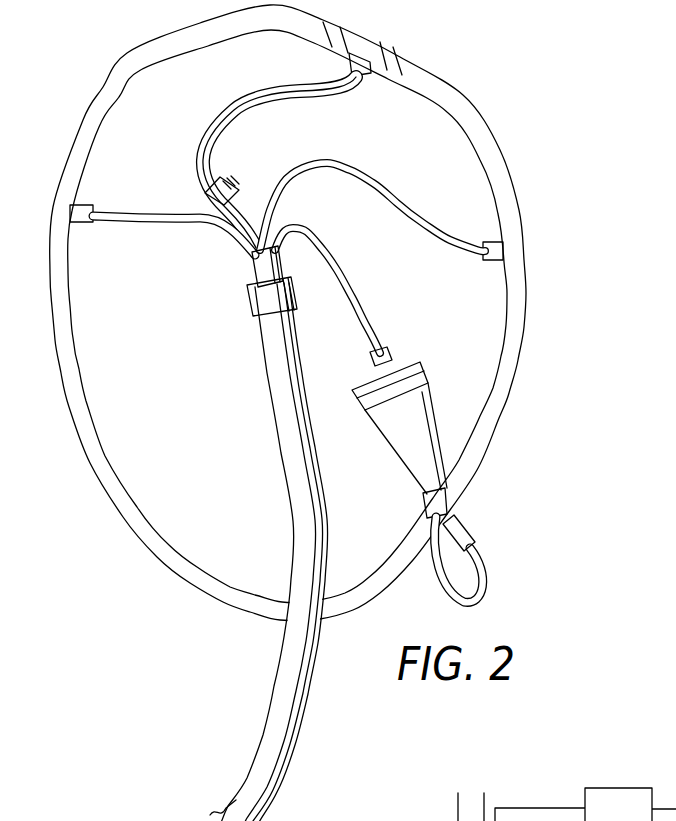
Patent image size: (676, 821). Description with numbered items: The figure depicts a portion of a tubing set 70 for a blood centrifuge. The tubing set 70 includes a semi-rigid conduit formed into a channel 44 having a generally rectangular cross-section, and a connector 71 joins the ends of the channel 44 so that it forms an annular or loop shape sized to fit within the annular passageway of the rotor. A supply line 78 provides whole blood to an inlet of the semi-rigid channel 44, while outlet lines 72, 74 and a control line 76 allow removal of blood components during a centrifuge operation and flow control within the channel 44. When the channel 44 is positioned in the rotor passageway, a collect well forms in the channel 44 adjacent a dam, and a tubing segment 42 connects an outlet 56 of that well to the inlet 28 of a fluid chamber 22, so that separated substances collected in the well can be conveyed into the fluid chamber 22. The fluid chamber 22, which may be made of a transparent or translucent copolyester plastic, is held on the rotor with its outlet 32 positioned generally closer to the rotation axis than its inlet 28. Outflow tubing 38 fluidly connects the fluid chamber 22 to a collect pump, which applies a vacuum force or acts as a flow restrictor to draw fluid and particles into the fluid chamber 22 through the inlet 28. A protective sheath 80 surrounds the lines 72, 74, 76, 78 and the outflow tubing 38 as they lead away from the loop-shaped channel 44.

The tubing set 70 is at (302, 413).
The channel 44 is at (158, 543).
The connector 71 is at (367, 45).
The control line 76 is at (288, 147).
The outlet line 74 is at (300, 100).
The outlet line 72 is at (118, 226).
The supply line 78 is at (398, 205).
The outflow tubing 38 is at (352, 293).
The protective sheath 80 is at (280, 719).
The fluid chamber 22 is at (433, 423).
The outlet 32 is at (387, 349).
The inlet 28 is at (425, 505).
The tubing segment 42 is at (477, 607).
The outlet 56 is at (472, 533).